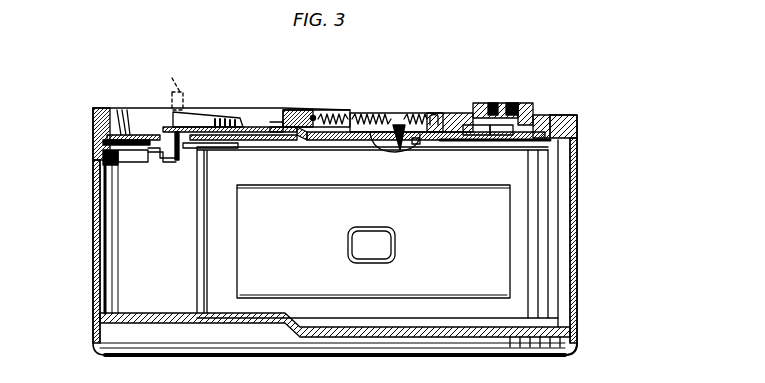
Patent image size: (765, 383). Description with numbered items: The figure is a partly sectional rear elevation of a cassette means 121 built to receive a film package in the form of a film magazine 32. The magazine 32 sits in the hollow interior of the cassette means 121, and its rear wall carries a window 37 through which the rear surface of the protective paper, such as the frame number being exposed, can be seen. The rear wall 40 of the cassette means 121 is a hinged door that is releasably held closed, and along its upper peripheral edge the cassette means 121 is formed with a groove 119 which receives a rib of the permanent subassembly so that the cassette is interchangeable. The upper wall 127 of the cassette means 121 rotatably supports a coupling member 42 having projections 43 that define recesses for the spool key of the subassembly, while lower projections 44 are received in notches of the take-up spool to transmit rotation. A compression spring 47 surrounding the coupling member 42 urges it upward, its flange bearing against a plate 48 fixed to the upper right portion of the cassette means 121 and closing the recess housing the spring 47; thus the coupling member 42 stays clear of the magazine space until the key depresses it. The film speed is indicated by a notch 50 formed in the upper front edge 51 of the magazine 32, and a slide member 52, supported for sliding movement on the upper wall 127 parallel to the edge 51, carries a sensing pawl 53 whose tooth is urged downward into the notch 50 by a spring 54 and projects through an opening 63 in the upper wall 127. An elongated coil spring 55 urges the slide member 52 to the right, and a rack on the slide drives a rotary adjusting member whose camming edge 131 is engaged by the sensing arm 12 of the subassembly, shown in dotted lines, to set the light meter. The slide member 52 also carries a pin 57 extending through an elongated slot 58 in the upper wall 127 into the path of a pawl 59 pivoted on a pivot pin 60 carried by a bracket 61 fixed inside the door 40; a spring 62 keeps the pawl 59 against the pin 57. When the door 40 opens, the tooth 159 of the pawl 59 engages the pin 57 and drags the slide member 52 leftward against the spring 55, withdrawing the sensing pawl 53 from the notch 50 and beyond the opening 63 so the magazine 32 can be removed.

The sensing arm 12 is at (166, 87).
The film magazine 32 is at (540, 238).
The window 37 is at (371, 250).
The rear wall 40 is at (95, 237).
The coupling member 42 is at (528, 104).
The projections 43 is at (490, 105).
The projections 44 is at (500, 137).
The compression spring 47 is at (540, 116).
The plate 48 is at (452, 115).
The notch 50 is at (390, 150).
The upper front edge 51 is at (418, 145).
The slide member 52 is at (258, 127).
The sensing pawl 53 is at (395, 115).
The spring 54 is at (312, 113).
The elongated coil spring 55 is at (412, 118).
The pin 57 is at (167, 160).
The elongated slot 58 is at (143, 130).
The pawl 59 is at (177, 160).
The pivot pin 60 is at (100, 142).
The bracket 61 is at (98, 182).
The spring 62 is at (98, 155).
The opening 63 is at (355, 136).
The groove 119 is at (570, 112).
The cassette means 121 is at (570, 345).
The upper wall 127 is at (470, 137).
The camming edge 131 is at (204, 112).
The tooth 159 is at (210, 150).